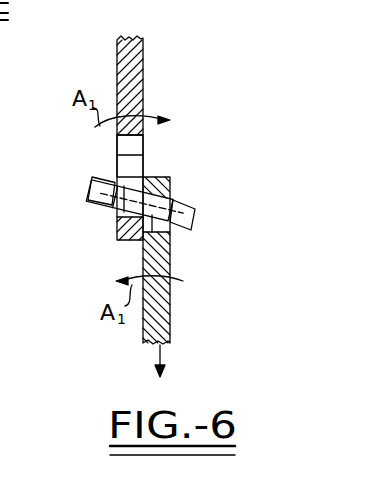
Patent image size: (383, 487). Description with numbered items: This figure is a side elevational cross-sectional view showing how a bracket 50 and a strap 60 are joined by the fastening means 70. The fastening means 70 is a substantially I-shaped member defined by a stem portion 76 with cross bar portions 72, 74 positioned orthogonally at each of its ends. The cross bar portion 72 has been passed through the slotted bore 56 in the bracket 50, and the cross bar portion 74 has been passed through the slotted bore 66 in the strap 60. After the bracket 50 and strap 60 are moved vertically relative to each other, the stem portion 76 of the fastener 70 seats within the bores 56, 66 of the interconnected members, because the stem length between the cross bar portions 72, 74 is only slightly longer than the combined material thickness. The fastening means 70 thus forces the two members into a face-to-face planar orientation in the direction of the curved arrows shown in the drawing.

The bracket 50 is at (147, 85).
The slotted bore 56 is at (141, 170).
The strap 60 is at (173, 301).
The fastening means 70 is at (200, 207).
The cross bar portion 72 is at (95, 183).
The cross bar portion 74 is at (192, 225).
The stem portion 76 is at (121, 208).
The slotted bore 66 is at (142, 251).